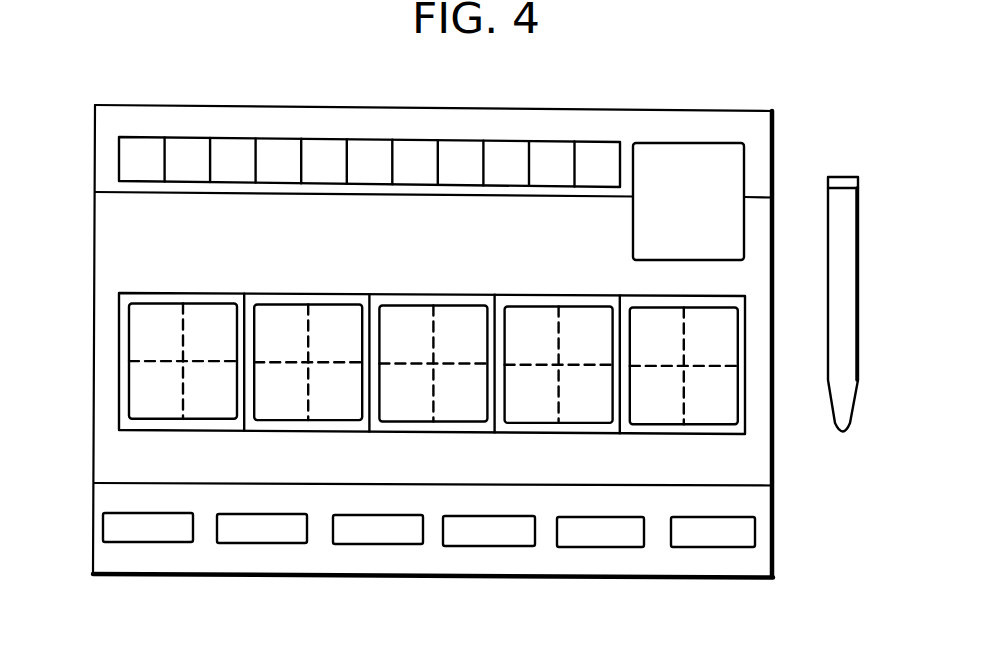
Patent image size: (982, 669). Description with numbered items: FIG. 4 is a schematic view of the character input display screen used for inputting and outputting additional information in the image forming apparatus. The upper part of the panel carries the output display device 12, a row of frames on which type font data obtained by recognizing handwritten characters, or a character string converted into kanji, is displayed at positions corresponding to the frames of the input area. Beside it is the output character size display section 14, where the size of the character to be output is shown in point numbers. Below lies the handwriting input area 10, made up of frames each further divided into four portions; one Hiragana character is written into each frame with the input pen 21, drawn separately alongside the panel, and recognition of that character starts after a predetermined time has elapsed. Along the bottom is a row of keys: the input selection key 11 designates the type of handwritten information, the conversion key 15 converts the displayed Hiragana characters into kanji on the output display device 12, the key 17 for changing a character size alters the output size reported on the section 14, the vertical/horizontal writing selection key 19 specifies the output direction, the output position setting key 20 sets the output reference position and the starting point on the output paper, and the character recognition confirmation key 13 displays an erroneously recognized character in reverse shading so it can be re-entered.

The handwriting input area 10 is at (138, 334).
The input selection key 11 is at (143, 535).
The output display device 12 is at (128, 158).
The character recognition confirmation key 13 is at (725, 544).
The output character size display section 14 is at (663, 150).
The conversion key 15 is at (262, 536).
The key for changing a character size 17 is at (370, 537).
The vertical/horizontal writing selection key 19 is at (493, 539).
The output position setting key 20 is at (607, 540).
The input pen 21 is at (842, 176).